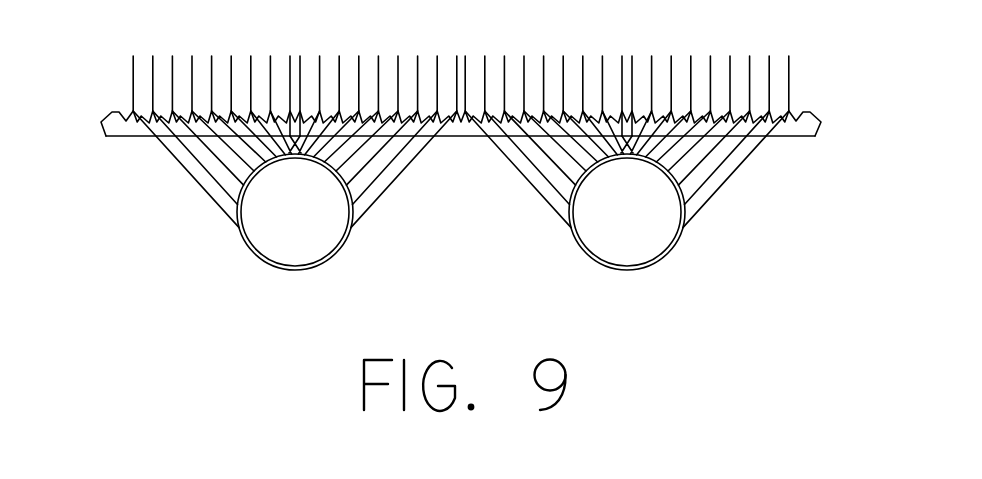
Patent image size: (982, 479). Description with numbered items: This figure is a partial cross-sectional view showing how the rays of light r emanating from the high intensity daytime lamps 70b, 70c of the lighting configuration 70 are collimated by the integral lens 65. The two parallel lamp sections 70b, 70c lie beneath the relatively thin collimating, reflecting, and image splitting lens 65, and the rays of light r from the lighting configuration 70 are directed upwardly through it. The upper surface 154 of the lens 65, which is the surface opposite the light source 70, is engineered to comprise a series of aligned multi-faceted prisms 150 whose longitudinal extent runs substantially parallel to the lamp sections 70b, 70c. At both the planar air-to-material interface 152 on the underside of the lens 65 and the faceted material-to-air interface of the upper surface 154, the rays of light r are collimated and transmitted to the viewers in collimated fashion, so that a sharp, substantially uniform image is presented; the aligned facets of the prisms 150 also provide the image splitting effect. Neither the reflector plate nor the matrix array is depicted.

The multi-faceted prisms 150 is at (433, 102).
The planar air-to-material interface 152 is at (128, 138).
The upper surface 154 is at (180, 110).
The integral lens 65 is at (804, 112).
The rays of light r is at (208, 196).
The lighting configuration 70 is at (547, 224).
The high intensity daytime lamp 70b is at (332, 254).
The high intensity daytime lamp 70c is at (664, 254).